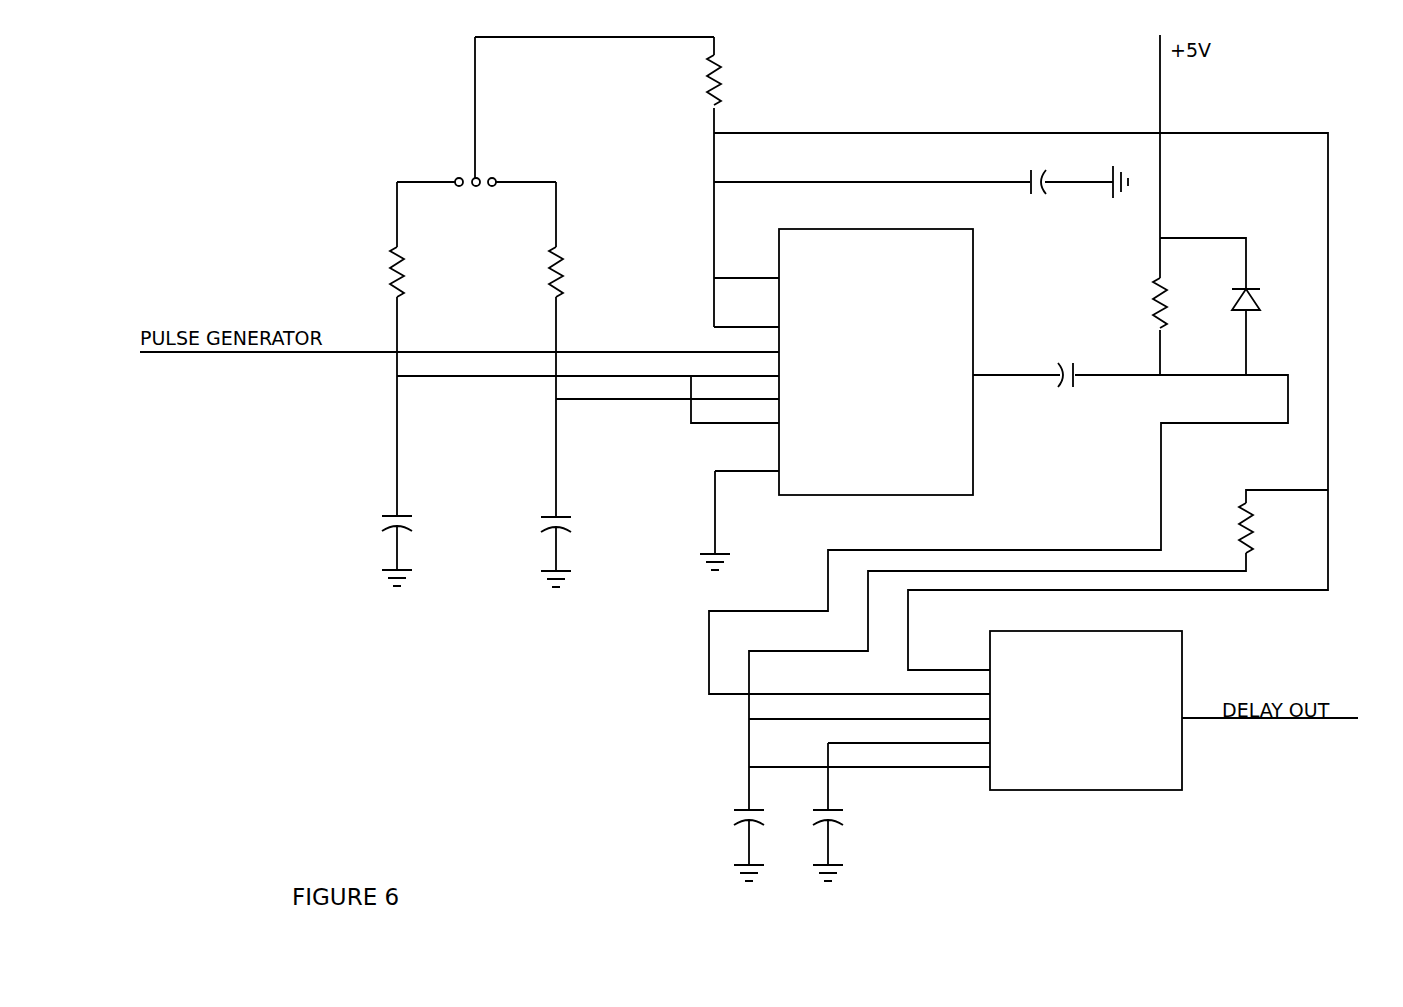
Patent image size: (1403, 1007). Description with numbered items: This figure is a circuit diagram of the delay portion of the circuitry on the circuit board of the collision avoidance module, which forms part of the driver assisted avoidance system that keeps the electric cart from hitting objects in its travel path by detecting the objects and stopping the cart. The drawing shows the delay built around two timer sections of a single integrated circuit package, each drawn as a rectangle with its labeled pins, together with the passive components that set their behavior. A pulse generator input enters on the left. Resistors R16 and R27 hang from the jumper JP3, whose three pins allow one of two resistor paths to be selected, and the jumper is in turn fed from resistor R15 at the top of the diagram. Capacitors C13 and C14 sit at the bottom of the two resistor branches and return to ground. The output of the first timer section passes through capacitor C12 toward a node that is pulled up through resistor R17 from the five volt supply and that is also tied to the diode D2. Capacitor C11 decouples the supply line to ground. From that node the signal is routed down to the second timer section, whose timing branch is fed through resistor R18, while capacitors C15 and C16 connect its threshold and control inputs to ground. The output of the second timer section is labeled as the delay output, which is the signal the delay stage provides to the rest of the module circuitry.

The resistor 20k R15 is at (736, 80).
The resistor 22k R16 is at (418, 272).
The resistor 10k R27 is at (577, 272).
The resistor 10K R17 is at (1138, 303).
The resistor 10k R18 is at (1269, 528).
The capacitor 1uf C11 is at (1029, 184).
The capacitor 4700pF C12 is at (1063, 379).
The capacitor .1uF C13 is at (420, 535).
The capacitor .1uF C14 is at (579, 535).
The capacitor .1uF C15 is at (724, 829).
The capacitor .1uF C16 is at (852, 829).
The diode D2 is at (1262, 305).
The jumper JP3 is at (478, 173).